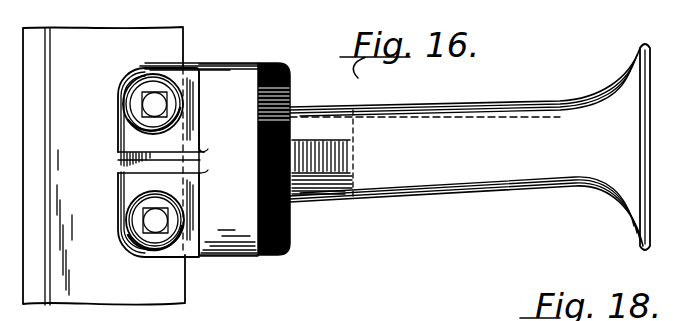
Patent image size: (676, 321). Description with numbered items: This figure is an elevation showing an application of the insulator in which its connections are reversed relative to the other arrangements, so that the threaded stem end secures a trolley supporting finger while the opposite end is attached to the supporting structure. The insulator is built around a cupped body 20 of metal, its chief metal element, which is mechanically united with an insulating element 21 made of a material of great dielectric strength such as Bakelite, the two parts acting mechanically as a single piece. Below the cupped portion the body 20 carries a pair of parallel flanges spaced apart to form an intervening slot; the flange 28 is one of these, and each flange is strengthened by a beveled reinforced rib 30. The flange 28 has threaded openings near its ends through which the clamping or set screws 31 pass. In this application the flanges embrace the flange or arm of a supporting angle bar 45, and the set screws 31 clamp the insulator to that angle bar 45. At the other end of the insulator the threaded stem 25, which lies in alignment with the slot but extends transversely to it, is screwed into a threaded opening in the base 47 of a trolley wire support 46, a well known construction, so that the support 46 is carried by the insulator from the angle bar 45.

In FIG. 16, the cupped body 20 is at (249, 58).
In FIG. 18, the cupped body 20 is at (522, 320).
In FIG. 16, the insulating element 21 is at (291, 76).
In FIG. 16, the threaded stem 25 is at (320, 140).
In FIG. 16, the flange 28 is at (122, 127).
In FIG. 16, the beveled reinforced rib 30 is at (120, 157).
In FIG. 16, the set screws 31 is at (155, 105).
In FIG. 16, the supporting angle bar 45 is at (185, 283).
In FIG. 16, the trolley wire support 46 is at (530, 198).
In FIG. 16, the base 47 is at (333, 192).